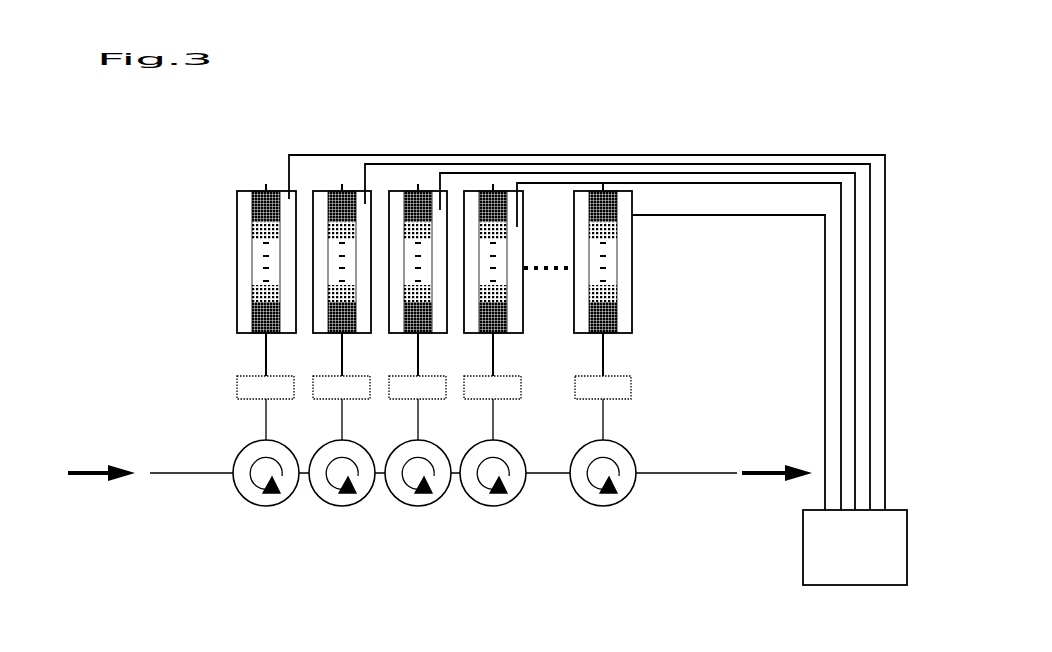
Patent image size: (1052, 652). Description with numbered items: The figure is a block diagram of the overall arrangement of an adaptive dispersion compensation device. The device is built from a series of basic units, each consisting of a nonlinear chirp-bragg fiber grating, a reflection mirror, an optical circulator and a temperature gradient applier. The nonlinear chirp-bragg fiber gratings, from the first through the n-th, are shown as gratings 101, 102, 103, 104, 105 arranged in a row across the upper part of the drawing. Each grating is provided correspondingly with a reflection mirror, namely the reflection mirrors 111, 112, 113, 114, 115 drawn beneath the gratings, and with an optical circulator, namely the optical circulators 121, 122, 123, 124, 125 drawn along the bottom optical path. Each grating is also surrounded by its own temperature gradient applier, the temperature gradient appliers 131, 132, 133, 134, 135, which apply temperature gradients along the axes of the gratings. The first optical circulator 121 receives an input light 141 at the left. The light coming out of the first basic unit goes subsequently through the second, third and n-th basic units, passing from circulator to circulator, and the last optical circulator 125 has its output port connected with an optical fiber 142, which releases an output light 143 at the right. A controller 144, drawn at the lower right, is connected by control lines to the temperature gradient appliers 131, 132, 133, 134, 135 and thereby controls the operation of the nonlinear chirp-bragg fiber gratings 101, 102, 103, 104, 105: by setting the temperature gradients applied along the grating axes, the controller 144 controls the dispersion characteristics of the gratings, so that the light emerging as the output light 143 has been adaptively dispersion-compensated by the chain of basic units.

The nonlinear chirp-bragg fiber grating #1 101 is at (265, 240).
The nonlinear chirp-bragg fiber grating #2 102 is at (342, 213).
The nonlinear chirp-bragg fiber grating #3 103 is at (418, 213).
The nonlinear chirp-bragg fiber grating #4 104 is at (494, 213).
The nonlinear chirp-bragg fiber grating #5 105 is at (607, 213).
The reflection mirror #1 111 is at (255, 389).
The reflection mirror #2 112 is at (350, 390).
The reflection mirror #3 113 is at (420, 385).
The reflection mirror #4 114 is at (503, 383).
The reflection mirror #n 115 is at (620, 389).
The optical circulator #1 121 is at (250, 493).
The optical circulator #2 122 is at (340, 498).
The optical circulator #3 123 is at (418, 500).
The optical circulator #4 124 is at (490, 502).
The optical circulator #n 125 is at (600, 502).
The temperature gradient applier #1 131 is at (285, 250).
The temperature gradient applier #2 132 is at (365, 273).
The temperature gradient applier #3 133 is at (440, 280).
The temperature gradient applier #4 134 is at (513, 244).
The temperature gradient applier #n 135 is at (622, 275).
The input light 141 is at (63, 477).
The optical fiber 142 is at (686, 476).
The output light 143 is at (788, 466).
The controller 144 is at (803, 573).